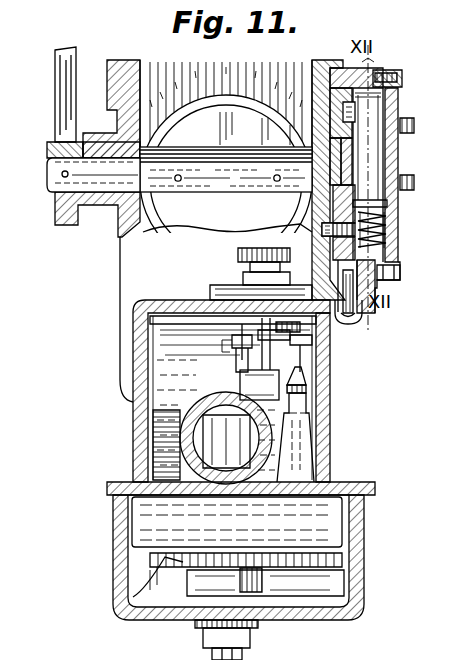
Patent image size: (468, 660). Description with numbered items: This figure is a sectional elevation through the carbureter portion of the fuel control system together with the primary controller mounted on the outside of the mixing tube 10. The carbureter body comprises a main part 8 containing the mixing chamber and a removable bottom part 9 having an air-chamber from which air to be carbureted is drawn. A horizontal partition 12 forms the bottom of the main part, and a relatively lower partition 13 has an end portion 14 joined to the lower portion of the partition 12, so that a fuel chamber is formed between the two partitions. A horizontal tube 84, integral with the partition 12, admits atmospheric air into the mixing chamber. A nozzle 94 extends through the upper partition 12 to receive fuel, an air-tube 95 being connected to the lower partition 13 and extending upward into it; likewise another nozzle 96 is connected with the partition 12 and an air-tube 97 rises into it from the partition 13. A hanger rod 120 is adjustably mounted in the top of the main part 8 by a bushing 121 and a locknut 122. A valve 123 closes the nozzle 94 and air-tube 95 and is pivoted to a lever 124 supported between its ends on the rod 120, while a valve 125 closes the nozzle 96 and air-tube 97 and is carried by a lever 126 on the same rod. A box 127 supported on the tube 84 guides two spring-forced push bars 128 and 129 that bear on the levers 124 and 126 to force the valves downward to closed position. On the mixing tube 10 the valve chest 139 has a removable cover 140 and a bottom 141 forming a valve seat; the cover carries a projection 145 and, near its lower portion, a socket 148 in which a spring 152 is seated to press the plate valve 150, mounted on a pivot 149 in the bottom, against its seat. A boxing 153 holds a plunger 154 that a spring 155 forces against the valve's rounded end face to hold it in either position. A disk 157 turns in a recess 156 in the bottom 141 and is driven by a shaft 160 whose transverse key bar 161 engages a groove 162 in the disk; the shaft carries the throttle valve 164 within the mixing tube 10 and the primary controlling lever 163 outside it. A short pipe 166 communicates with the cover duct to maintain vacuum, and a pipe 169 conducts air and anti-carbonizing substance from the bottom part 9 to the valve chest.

The main part 8 is at (147, 421).
The removable bottom part 9 is at (140, 568).
The mixing tube 10 is at (120, 230).
The horizontal partition 12 is at (342, 522).
The lower partition 13 is at (183, 563).
The end portion 14 is at (342, 550).
The horizontal tube 84 is at (160, 444).
The nozzle 94 is at (222, 440).
The air-tube 95 is at (140, 604).
The nozzle 96 is at (312, 455).
The air-tube 97 is at (320, 575).
The hanger rod 120 is at (300, 342).
The bushing 121 is at (210, 293).
The locknut 122 is at (236, 256).
The valve 123 is at (225, 365).
The lever 124 is at (200, 330).
The valve 125 is at (300, 375).
The lever 126 is at (312, 358).
The box 127 is at (296, 398).
The push bar 128 is at (250, 380).
The push bar 129 is at (300, 390).
The valve chest 139 is at (380, 70).
The removable cover 140 is at (396, 100).
The bottom 141 is at (352, 116).
The projection 145 is at (352, 172).
The socket 148 is at (388, 230).
The pivot 149 is at (398, 270).
The plate valve 150 is at (372, 220).
The spring 152 is at (370, 248).
The boxing 153 is at (364, 320).
The plunger 154 is at (232, 244).
The spring 155 is at (370, 292).
The recess 156 is at (336, 160).
The disk 157 is at (313, 160).
The shaft 160 is at (108, 156).
The transverse key bar 161 is at (232, 132).
The groove 162 is at (345, 165).
The primary controlling lever 163 is at (62, 78).
The throttle valve 164 is at (193, 102).
The short pipe 166 is at (414, 126).
The pipe 169 is at (414, 183).